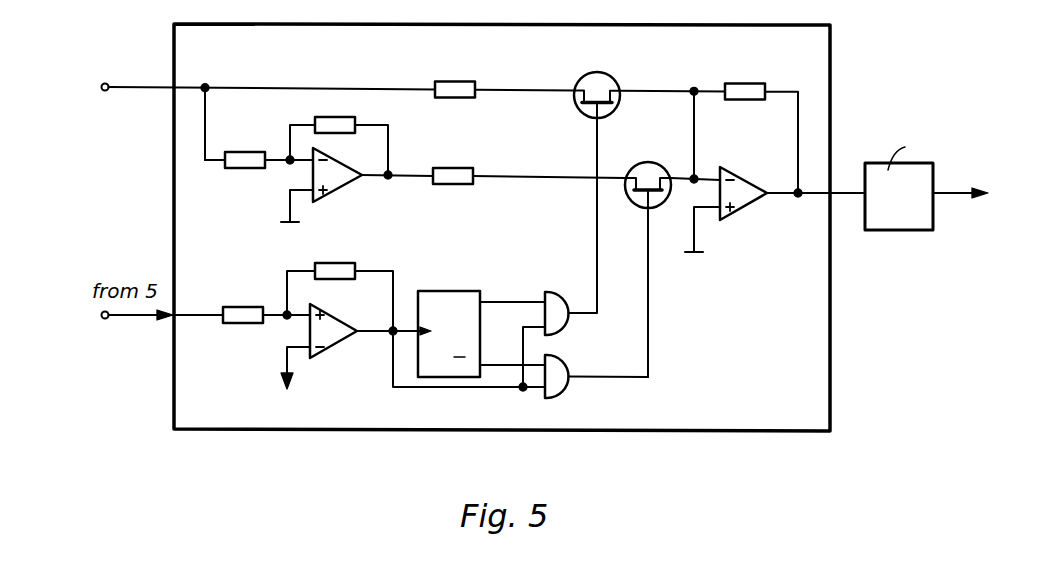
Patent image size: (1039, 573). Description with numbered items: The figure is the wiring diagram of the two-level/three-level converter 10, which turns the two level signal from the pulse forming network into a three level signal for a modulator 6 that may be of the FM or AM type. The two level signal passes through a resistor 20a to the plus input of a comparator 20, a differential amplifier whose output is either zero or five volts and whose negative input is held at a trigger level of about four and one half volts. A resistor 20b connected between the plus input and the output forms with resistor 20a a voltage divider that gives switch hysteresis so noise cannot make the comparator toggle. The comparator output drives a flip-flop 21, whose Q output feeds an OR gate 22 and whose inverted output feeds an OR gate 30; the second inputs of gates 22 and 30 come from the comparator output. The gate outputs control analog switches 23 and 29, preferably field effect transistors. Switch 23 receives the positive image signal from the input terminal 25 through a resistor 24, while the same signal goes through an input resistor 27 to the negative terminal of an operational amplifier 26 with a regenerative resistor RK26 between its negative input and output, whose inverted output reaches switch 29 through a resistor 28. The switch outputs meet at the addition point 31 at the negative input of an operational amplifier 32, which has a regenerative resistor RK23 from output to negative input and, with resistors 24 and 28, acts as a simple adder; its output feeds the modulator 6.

The 2-level/3-level converter 10 is at (810, 347).
The input terminal 25 is at (109, 83).
The input resistor 27 is at (243, 152).
The regenerative resistor RK26 is at (332, 124).
The operational amplifier 26 is at (336, 182).
The resistor 24 is at (453, 82).
The resistor 28 is at (453, 168).
The switch 23 is at (593, 83).
The switch 29 is at (646, 172).
The addition point 31 is at (694, 143).
The regenerative resistor RK23 is at (748, 88).
The operational amplifier 32 is at (740, 203).
The modulator 6 is at (902, 231).
The resistor 20a is at (243, 308).
The resistor 20b is at (334, 266).
The comparator 20 is at (333, 338).
The flip-flop 21 is at (444, 300).
The OR gate 22 is at (555, 305).
The OR gate 30 is at (556, 377).